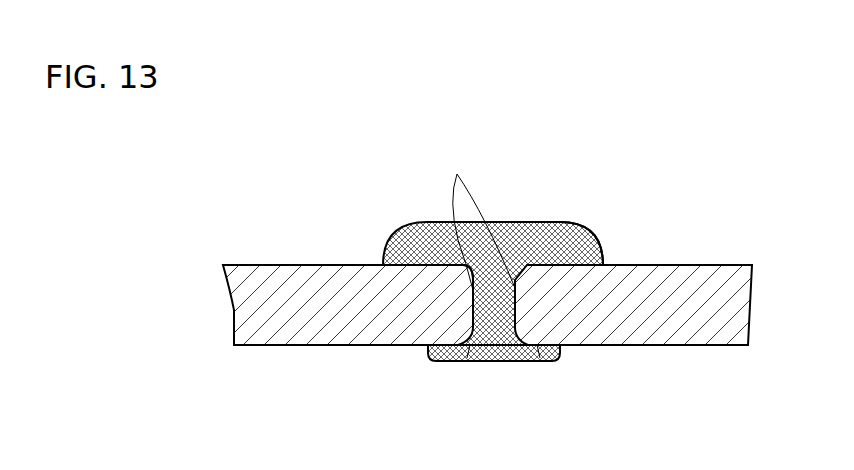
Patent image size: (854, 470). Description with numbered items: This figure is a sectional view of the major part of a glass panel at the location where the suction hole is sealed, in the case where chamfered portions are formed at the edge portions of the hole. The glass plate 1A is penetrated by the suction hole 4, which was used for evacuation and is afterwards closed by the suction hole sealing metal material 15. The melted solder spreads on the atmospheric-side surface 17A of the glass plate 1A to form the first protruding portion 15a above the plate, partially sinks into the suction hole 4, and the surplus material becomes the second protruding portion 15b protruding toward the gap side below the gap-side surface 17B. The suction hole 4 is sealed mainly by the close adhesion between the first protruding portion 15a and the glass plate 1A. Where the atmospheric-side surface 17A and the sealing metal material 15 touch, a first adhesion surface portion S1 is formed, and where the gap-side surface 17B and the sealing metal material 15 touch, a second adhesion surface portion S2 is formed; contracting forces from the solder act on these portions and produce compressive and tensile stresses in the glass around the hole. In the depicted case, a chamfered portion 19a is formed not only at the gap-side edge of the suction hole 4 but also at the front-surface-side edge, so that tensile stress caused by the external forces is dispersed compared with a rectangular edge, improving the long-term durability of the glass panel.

The glass plate 1A is at (268, 263).
The atmospheric-side surface 17A is at (683, 263).
The gap-side surface 17B is at (597, 347).
The suction hole 4 is at (473, 290).
The suction hole sealing metal material 15 is at (506, 177).
The first protruding portion 15a is at (526, 222).
The second protruding portion 15b is at (443, 362).
The chamfered portion 19a is at (466, 401).
The first adhesion surface portion S1 is at (583, 249).
The second adhesion surface portion S2 is at (534, 362).